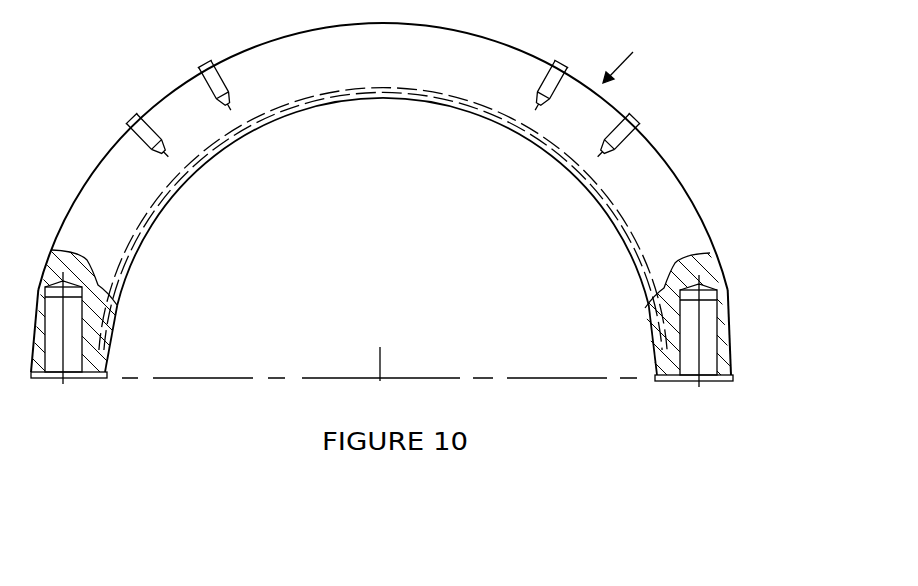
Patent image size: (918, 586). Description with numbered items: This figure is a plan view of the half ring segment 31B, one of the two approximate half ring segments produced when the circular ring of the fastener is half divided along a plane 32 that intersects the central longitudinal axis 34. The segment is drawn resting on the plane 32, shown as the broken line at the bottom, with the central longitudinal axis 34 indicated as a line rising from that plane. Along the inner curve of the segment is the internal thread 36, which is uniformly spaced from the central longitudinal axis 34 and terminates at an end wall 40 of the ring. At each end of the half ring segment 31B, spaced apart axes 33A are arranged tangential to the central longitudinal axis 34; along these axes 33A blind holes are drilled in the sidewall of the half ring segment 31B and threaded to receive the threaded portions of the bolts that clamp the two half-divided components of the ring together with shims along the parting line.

The end wall 40 is at (468, 79).
The internal thread 36 is at (537, 150).
The half ring segment 31B is at (675, 175).
The spaced apart axes 33A is at (65, 340).
The central longitudinal axis 34 is at (380, 376).
The plane 32 is at (443, 378).